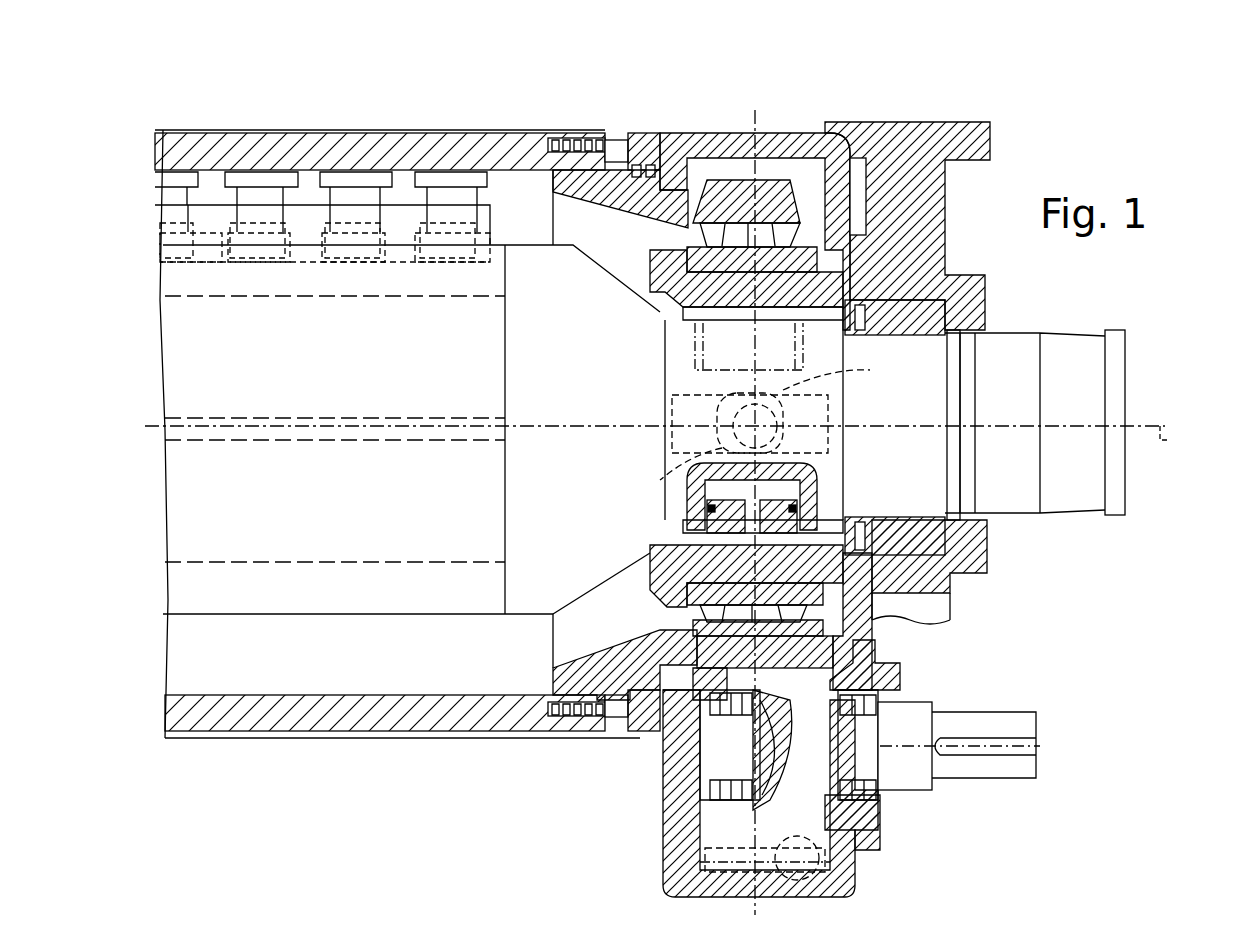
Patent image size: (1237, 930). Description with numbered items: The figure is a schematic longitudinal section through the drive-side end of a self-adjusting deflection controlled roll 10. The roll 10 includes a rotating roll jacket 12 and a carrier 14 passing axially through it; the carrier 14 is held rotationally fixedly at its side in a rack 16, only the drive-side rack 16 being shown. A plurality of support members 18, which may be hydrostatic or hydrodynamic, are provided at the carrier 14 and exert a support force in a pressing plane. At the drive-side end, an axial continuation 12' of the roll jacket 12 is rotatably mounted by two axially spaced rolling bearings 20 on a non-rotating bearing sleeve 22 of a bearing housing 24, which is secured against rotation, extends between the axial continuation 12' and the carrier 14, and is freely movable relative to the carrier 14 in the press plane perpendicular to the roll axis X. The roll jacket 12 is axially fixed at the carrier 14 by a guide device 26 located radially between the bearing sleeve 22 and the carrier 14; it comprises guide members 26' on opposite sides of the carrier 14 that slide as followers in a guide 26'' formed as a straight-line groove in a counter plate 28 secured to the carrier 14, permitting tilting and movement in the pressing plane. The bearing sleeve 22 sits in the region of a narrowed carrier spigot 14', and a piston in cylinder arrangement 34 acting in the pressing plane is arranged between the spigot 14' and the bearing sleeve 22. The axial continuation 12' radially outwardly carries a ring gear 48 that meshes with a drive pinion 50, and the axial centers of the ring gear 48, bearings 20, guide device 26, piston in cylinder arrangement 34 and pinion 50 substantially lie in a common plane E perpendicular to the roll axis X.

The deflection controlled roll 10 is at (210, 118).
The roll jacket 12 is at (407, 411).
The axial continuation 12' is at (766, 392).
The carrier 14 is at (411, 419).
The carrier spigot 14' is at (725, 420).
The rack 16 is at (960, 135).
The support members 18 is at (345, 178).
The rolling bearings 20 is at (775, 245).
The bearing sleeve 22 is at (648, 580).
The bearing housing 24 is at (860, 200).
The guide device 26 is at (719, 413).
The guide member 26' is at (669, 473).
The guide 26'' is at (842, 371).
The counter plate 28 is at (680, 438).
The piston in cylinder arrangement 34 is at (810, 500).
The ring gear 48 is at (720, 185).
The drive pinion 50 is at (795, 800).
The common plane E is at (700, 868).
The roll axis X is at (667, 444).